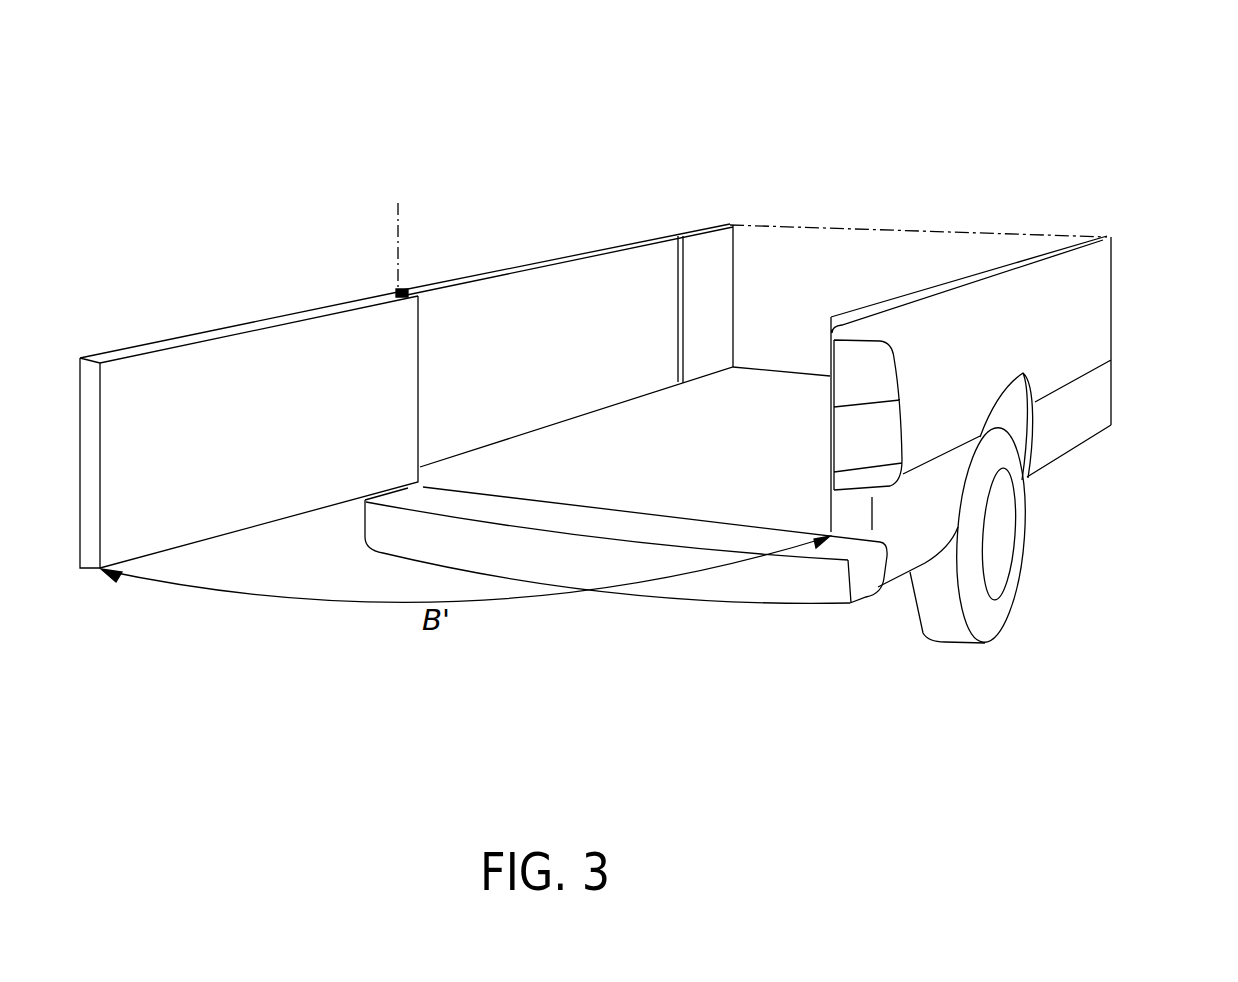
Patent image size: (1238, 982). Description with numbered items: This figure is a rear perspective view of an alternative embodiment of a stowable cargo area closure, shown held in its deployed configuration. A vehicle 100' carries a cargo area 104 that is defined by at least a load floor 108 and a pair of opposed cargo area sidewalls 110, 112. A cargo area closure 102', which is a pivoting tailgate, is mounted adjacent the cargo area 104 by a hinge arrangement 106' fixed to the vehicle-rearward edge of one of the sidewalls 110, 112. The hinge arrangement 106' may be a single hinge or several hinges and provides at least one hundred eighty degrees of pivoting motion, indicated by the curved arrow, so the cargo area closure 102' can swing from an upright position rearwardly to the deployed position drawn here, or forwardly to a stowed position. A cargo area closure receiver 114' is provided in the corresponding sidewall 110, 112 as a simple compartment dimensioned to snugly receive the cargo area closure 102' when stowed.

The vehicle 100' is at (775, 356).
The cargo area closure 102' is at (230, 423).
The cargo area 104 is at (752, 319).
The hinge arrangement 106' is at (359, 250).
The load floor 108 is at (680, 482).
The cargo area sidewall 110 is at (675, 236).
The cargo area sidewall 112 is at (1067, 278).
The cargo area closure receiver 114' is at (565, 281).